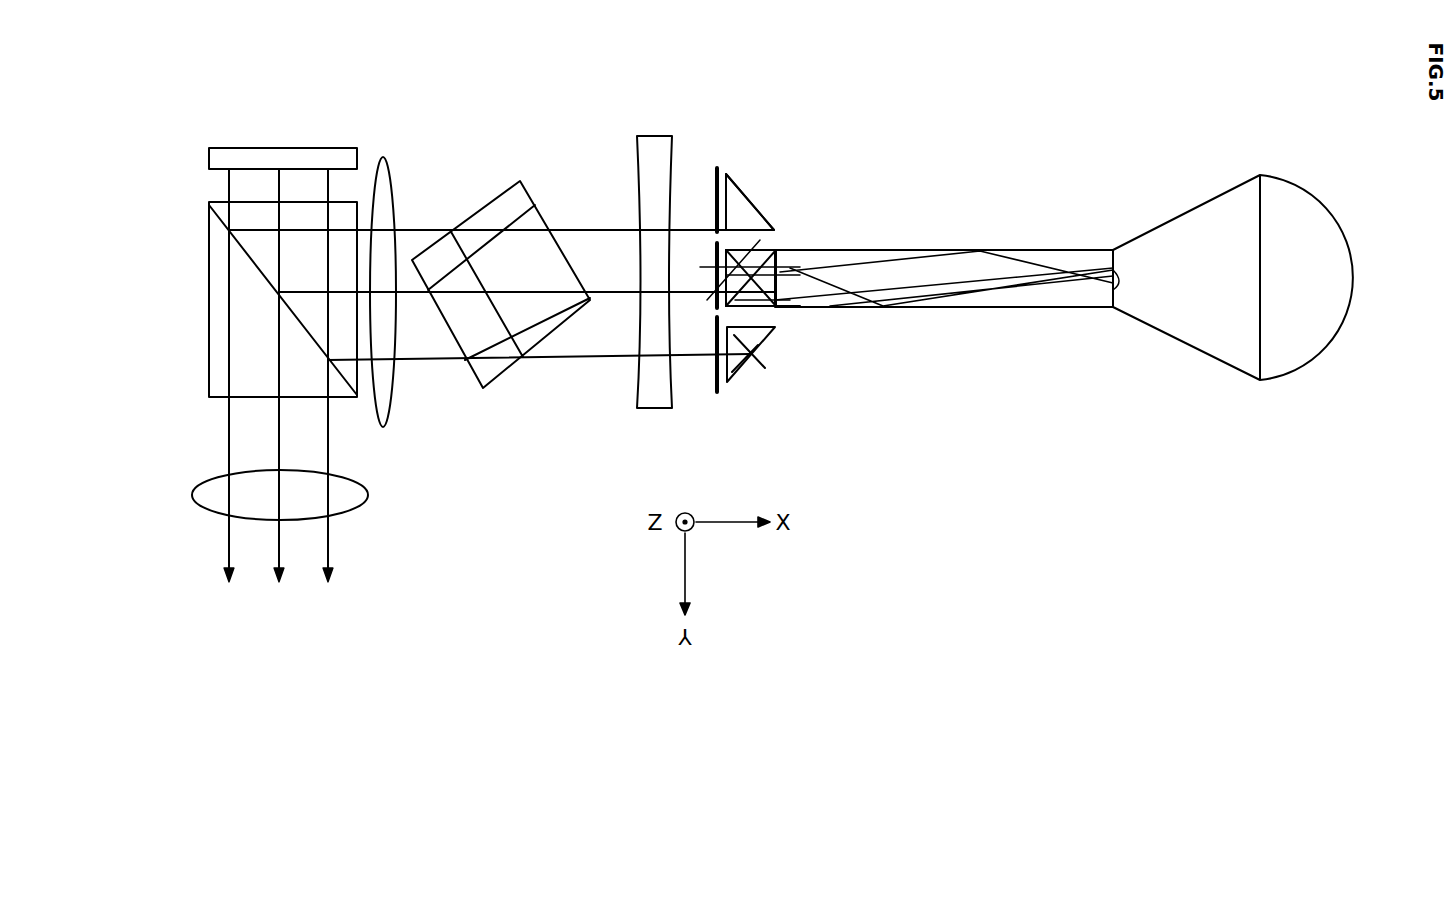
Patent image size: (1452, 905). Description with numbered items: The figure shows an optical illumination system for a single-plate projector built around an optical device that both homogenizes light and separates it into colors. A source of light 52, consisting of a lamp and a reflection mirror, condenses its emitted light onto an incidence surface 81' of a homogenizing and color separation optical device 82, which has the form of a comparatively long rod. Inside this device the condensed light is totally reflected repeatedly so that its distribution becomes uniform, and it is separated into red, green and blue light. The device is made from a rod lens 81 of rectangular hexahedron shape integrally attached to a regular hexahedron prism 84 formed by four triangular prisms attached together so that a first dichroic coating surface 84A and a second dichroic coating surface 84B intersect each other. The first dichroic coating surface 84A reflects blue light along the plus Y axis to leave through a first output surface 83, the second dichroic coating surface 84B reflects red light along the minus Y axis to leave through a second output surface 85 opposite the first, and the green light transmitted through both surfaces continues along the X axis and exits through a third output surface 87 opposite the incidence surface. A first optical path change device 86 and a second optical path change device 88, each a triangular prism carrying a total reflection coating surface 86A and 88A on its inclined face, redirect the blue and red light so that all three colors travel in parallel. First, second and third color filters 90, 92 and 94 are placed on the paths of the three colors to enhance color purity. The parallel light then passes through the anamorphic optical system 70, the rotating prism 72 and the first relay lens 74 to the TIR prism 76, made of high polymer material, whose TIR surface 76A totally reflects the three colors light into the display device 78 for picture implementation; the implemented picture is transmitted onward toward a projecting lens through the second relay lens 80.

The source of light 52 is at (1287, 368).
The anamorphic optical system 70 is at (663, 136).
The rotating prism 72 is at (513, 186).
The first relay lens 74 is at (380, 157).
The TIR prism 76 is at (212, 380).
The TIR surface 76A is at (250, 265).
The display device 78 is at (209, 160).
The second relay lens 80 is at (194, 494).
The rod lens 81 is at (944, 302).
The incidence surface 81' is at (1135, 241).
The homogenizing and color separation optical device 82 is at (932, 338).
The first output surface 83 is at (735, 300).
The regular hexahedron prism 84 is at (778, 276).
The first dichroic coating surface 84A is at (777, 304).
The second dichroic coating surface 84B is at (778, 253).
The second output surface 85 is at (745, 262).
The first optical path change device 86 is at (745, 368).
The total reflection coating surface 86A is at (760, 345).
The third output surface 87 is at (740, 276).
The second optical path change device 88 is at (758, 256).
The total reflection coating surface 88A is at (768, 250).
The first color filter 90 is at (716, 168).
The second color filter 92 is at (707, 300).
The third color filter 94 is at (717, 392).